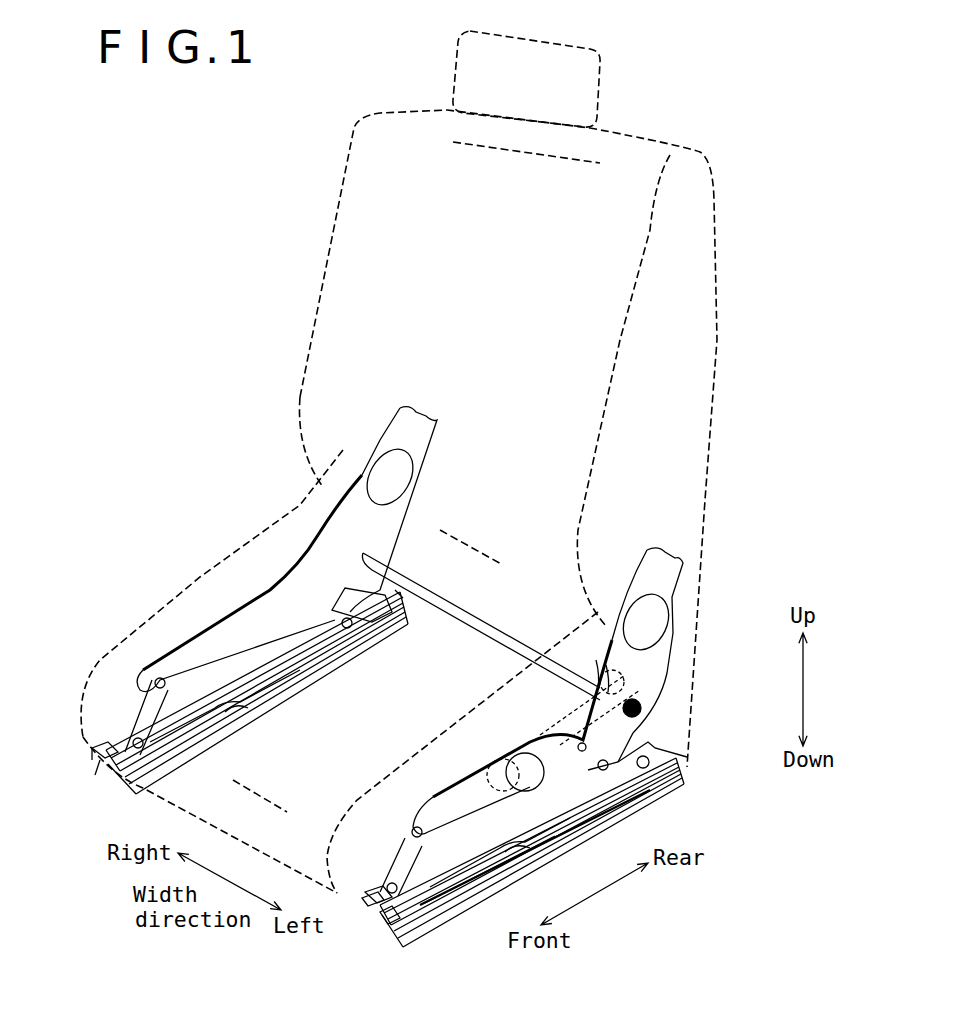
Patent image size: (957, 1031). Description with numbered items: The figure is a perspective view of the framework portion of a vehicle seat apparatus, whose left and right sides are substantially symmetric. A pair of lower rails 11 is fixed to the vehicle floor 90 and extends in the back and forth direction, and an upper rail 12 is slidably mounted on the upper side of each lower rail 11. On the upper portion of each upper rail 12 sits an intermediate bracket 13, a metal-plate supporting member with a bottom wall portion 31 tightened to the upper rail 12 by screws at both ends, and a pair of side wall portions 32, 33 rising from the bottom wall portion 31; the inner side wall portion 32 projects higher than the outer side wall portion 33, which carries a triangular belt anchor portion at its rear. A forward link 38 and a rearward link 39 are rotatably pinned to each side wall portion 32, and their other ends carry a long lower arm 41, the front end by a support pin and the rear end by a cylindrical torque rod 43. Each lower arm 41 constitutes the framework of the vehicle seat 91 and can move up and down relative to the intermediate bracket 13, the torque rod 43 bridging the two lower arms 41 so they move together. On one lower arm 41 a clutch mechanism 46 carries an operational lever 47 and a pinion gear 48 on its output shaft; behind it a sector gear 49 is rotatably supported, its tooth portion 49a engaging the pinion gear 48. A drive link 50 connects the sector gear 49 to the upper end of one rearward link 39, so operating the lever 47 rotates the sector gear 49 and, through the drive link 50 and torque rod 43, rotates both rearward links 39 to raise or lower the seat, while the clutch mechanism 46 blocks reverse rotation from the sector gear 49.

The lower rail 11 is at (163, 773).
The upper rail 12 is at (118, 792).
The intermediate bracket 13 is at (90, 752).
The bottom wall portion 31 is at (367, 923).
The side wall portion 32 is at (360, 900).
The side wall portion 33 is at (455, 907).
The forward link 38 is at (133, 722).
The rearward link 39 is at (332, 594).
The lower arm 41 is at (143, 672).
The torque rod 43 is at (498, 625).
The clutch mechanism 46 is at (490, 797).
The operational lever 47 is at (563, 847).
The pinion gear 48 is at (487, 760).
The sector gear 49 is at (563, 717).
The tooth portion 49a is at (527, 738).
The drive link 50 is at (598, 668).
The vehicle floor 90 is at (213, 803).
The vehicle seat 91 is at (215, 595).